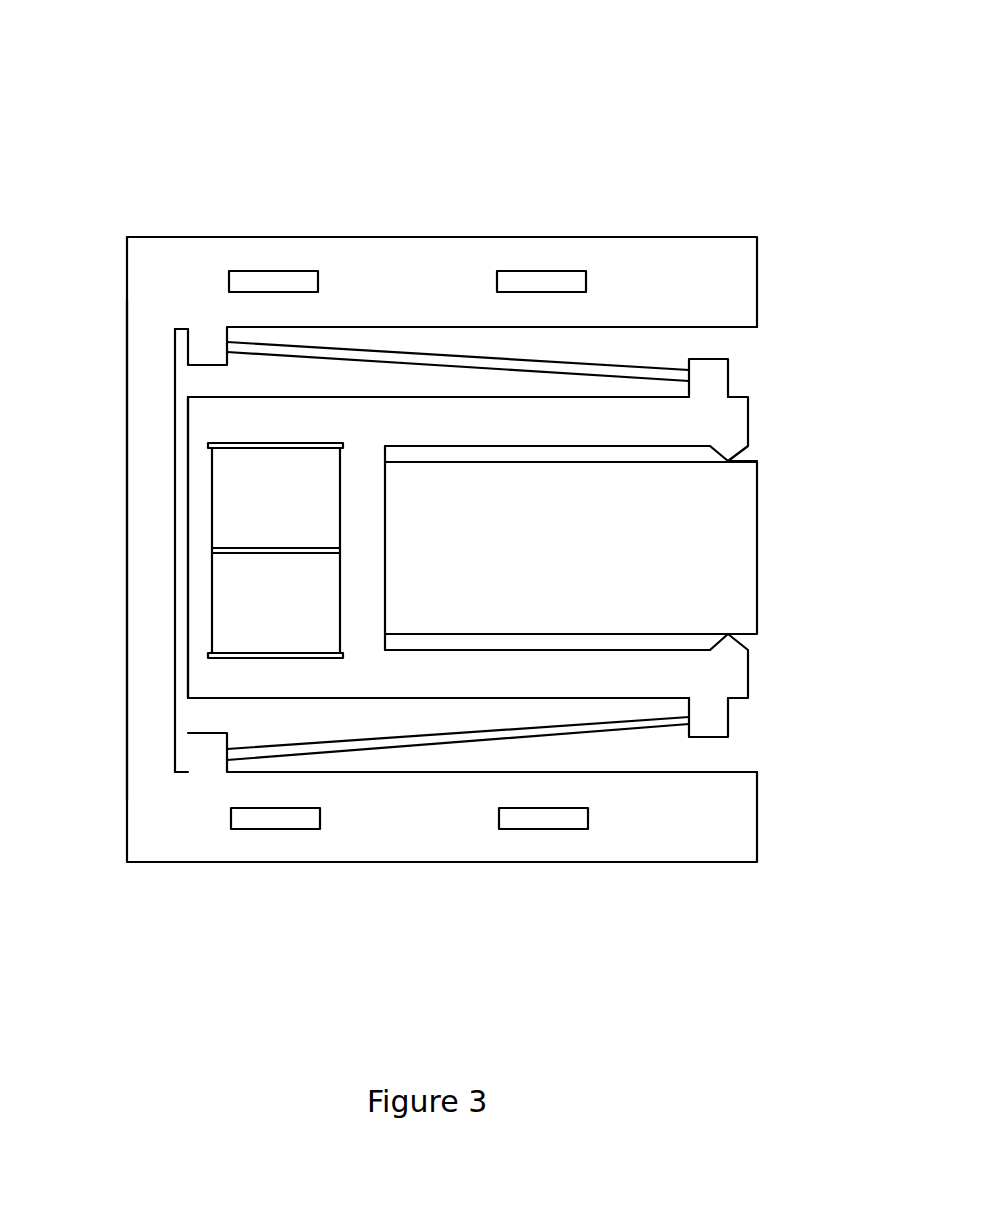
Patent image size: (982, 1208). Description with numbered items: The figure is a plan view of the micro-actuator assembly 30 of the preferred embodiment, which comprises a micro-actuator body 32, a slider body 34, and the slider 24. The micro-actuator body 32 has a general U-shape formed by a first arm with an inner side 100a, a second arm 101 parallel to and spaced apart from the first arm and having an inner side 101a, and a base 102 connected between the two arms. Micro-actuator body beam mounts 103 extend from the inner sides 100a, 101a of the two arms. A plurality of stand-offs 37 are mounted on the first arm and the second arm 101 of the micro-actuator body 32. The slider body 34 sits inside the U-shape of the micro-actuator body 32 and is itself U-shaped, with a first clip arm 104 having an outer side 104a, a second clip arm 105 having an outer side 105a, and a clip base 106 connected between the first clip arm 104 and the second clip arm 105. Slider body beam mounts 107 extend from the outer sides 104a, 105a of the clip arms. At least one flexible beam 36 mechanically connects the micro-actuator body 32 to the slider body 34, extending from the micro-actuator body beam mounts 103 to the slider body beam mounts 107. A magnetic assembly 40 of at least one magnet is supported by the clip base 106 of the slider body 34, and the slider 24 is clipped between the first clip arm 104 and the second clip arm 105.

The micro-actuator assembly 30 is at (327, 146).
The micro-actuator body 32 is at (135, 887).
The slider body 34 is at (200, 393).
The flexible beam 36 is at (372, 355).
The stand-offs 37 is at (577, 955).
The magnetic assembly 40 is at (238, 597).
The slider 24 is at (740, 590).
The inner side of first arm 100a is at (695, 312).
The second arm 101 is at (688, 255).
The inner side of second arm 101a is at (720, 770).
The base 102 is at (143, 720).
The micro-actuator body beam mounts 103 is at (203, 345).
The first clip arm 104 is at (733, 427).
The outer side of first clip arm 104a is at (348, 397).
The second clip arm 105 is at (732, 668).
The outer side of second clip arm 105a is at (312, 699).
The clip base 106 is at (215, 682).
The slider body beam mounts 107 is at (712, 375).